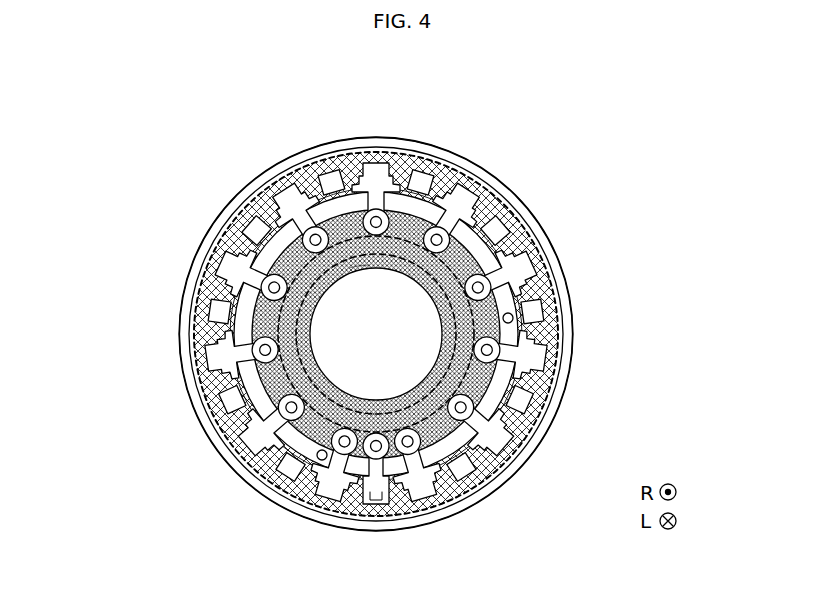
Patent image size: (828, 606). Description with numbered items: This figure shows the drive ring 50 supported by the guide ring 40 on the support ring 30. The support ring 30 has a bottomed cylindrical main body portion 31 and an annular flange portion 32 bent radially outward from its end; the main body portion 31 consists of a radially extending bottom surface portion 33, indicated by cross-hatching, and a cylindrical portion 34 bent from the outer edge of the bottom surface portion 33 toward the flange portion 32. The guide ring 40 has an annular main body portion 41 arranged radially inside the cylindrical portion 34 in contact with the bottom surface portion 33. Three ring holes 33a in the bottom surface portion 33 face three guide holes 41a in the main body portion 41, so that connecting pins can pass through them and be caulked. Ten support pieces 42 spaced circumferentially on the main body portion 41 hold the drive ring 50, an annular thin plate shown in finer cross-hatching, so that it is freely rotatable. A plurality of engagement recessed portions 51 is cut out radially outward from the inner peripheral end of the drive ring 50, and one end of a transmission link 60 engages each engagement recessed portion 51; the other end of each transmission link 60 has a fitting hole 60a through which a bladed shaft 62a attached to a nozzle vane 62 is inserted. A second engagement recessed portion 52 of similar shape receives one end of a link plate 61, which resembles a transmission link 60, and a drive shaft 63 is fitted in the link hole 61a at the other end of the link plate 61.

The support ring 30 is at (357, 137).
The main body portion 31 is at (528, 227).
The flange portion 32 is at (506, 190).
The bottom surface portion 33 is at (442, 188).
The ring hole 33a is at (513, 318).
The cylindrical portion 34 is at (525, 212).
The guide ring 40 is at (527, 379).
The main body portion 41 is at (530, 391).
The guide hole 41a is at (520, 311).
The support piece 42 is at (310, 178).
The drive ring 50 is at (312, 163).
The engagement recessed portion 51 is at (262, 193).
The second engagement recessed portion 52 is at (372, 505).
The transmission link 60 is at (292, 236).
The fitting hole 60a is at (327, 272).
The link plate 61 is at (362, 480).
The link hole 61a is at (373, 440).
The nozzle vane 62 is at (200, 349).
The bladed shaft 62a is at (349, 268).
The drive shaft 63 is at (388, 490).